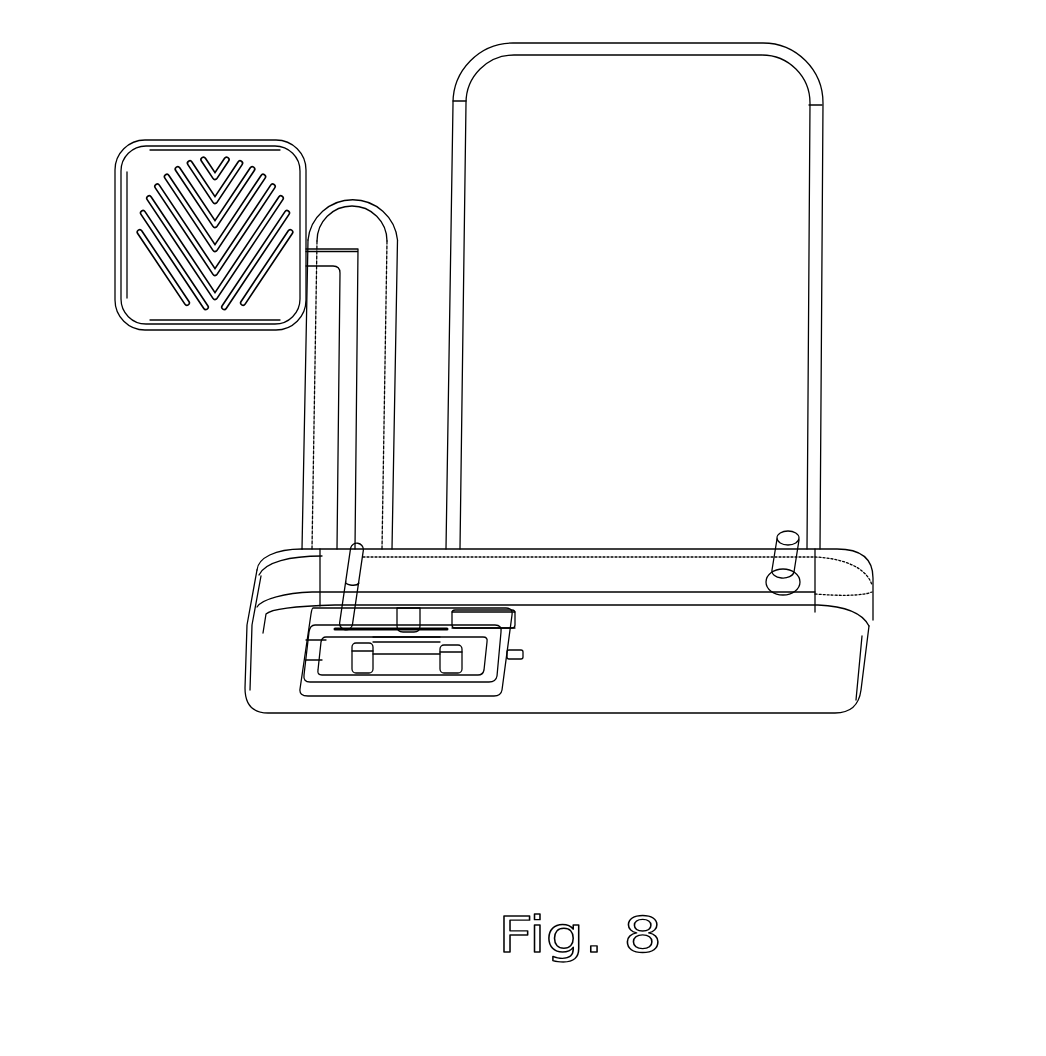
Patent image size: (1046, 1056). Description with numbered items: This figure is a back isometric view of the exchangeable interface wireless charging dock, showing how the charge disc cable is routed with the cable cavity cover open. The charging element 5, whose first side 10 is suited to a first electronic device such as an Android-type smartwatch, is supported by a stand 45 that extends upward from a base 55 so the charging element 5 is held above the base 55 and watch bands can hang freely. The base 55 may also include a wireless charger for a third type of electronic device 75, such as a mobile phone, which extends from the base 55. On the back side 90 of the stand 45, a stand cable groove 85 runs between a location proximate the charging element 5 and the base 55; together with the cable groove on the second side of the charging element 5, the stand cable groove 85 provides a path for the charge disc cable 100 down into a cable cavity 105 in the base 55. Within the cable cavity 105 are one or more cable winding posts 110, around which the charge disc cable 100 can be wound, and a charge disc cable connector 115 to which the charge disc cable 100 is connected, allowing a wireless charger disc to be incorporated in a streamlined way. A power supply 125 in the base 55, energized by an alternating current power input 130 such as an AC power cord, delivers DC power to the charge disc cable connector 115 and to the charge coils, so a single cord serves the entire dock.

The charging element 5 is at (145, 300).
The first side 10 is at (158, 167).
The stand 45 is at (356, 237).
The base 55 is at (268, 582).
The third type of electronic device 75 is at (740, 306).
The stand cable groove 85 is at (200, 399).
The charge disc cable 100 is at (348, 428).
The back side 90 is at (637, 440).
The cable cavity 105 is at (410, 688).
The cable winding posts 110 is at (362, 655).
The charge disc cable connector 115 is at (513, 620).
The power supply 125 is at (677, 652).
The alternating current power input 130 is at (785, 560).